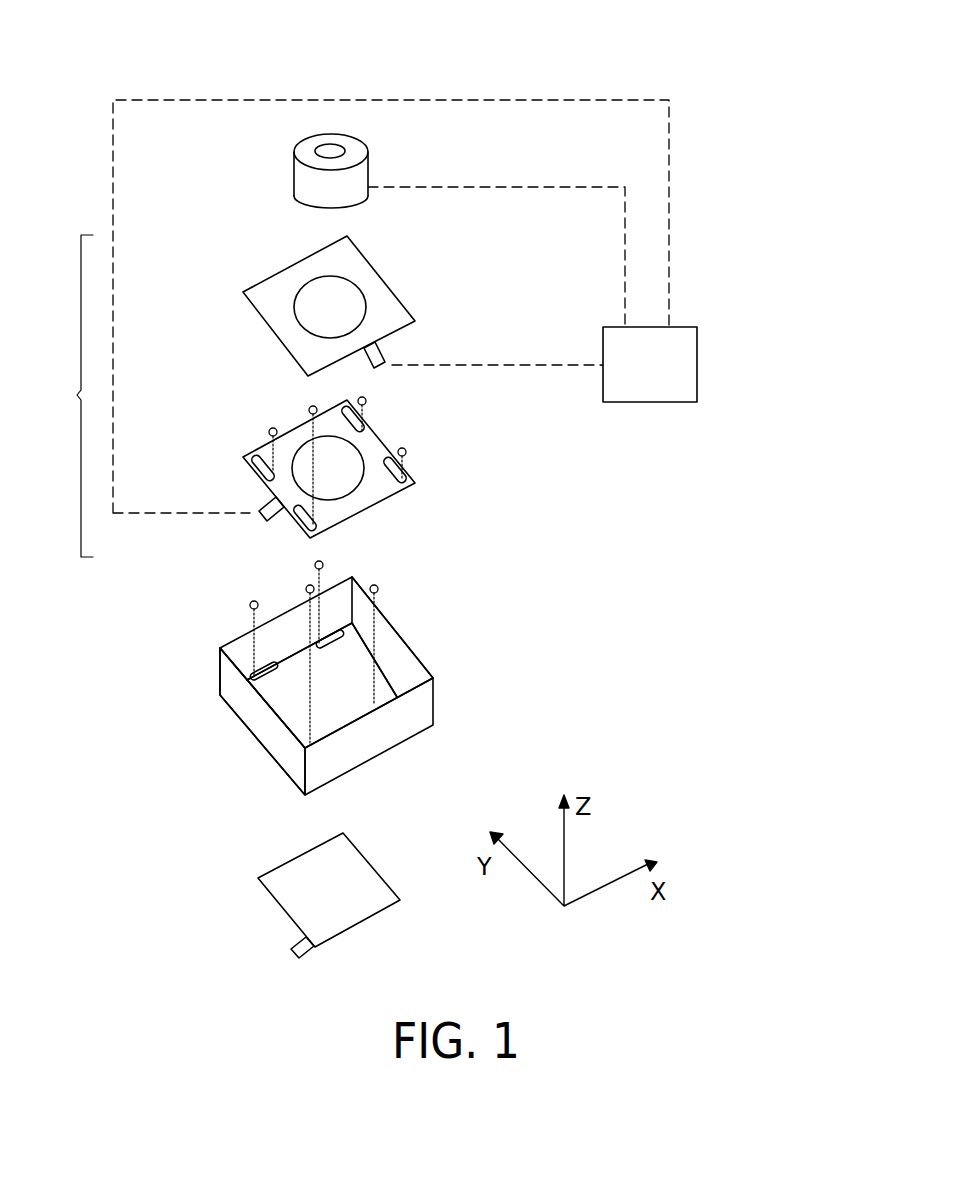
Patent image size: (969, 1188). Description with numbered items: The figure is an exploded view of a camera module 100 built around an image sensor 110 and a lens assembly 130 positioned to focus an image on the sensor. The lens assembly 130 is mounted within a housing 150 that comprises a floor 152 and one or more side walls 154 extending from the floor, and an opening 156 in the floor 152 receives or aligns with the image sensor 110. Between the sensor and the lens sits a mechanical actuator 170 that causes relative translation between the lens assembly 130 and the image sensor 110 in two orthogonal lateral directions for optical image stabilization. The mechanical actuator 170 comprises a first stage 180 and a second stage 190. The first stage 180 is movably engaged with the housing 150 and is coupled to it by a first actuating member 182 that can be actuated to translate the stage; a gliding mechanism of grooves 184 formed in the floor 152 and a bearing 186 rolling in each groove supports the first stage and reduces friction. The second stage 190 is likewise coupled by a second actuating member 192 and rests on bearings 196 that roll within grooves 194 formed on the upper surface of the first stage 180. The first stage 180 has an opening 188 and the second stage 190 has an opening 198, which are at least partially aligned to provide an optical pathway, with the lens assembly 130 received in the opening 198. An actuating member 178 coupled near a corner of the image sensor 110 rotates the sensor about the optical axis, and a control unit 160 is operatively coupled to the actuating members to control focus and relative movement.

The camera module 100 is at (408, 70).
The image sensor 110 is at (312, 905).
The lens assembly 130 is at (352, 182).
The housing 150 is at (418, 708).
The floor 152 is at (382, 667).
The side walls 154 is at (382, 630).
The opening 156 is at (290, 703).
The control unit 160 is at (683, 355).
The mechanical actuator 170 is at (59, 396).
The actuating member 178 is at (292, 955).
The first stage 180 is at (372, 443).
The first actuating member 182 is at (262, 508).
The grooves 184 is at (328, 640).
The bearing 186 is at (315, 563).
The opening 188 is at (305, 457).
The second stage 190 is at (372, 282).
The second actuating member 192 is at (378, 362).
The grooves 194 is at (258, 458).
The bearing 196 is at (270, 430).
The opening 198 is at (328, 300).